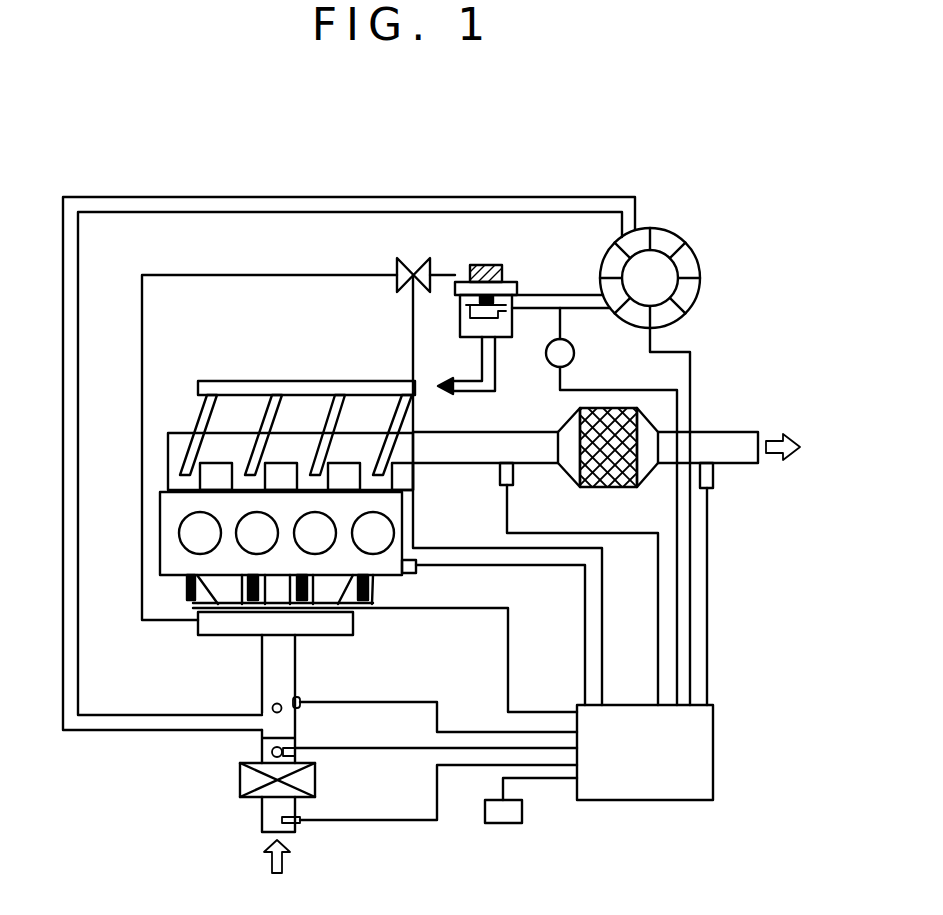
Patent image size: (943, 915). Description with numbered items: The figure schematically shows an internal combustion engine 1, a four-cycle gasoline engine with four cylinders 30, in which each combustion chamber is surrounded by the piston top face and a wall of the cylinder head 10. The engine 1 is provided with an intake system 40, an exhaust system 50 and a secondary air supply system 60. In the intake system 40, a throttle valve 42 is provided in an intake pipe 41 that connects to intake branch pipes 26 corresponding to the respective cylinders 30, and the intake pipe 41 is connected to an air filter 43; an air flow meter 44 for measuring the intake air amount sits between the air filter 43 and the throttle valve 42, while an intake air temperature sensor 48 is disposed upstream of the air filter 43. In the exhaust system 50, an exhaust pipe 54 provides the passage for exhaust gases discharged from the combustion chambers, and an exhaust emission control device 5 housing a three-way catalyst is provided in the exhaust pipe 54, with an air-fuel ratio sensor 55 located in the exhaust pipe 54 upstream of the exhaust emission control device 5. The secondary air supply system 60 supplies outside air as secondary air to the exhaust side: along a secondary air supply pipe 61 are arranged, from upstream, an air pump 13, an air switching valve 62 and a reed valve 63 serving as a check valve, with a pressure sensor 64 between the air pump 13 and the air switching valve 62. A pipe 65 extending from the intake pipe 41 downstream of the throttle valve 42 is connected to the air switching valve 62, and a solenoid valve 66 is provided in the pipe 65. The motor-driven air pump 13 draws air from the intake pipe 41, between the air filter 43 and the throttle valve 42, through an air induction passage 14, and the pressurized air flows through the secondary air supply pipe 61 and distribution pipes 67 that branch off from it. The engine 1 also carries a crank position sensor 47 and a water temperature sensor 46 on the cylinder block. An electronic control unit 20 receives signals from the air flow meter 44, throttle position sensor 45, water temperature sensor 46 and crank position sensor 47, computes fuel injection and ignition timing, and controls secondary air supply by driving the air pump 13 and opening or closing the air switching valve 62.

The internal combustion engine 1 is at (337, 572).
The exhaust emission control device 5 is at (585, 490).
The cylinder head 10 is at (160, 503).
The air pump 13 is at (701, 261).
The air induction passage 14 is at (416, 197).
The electronic control unit (ECU) 20 is at (638, 801).
The intake branch pipes 26 is at (374, 578).
The cylinders 30 is at (180, 540).
The intake system 40 is at (242, 802).
The intake pipe 41 is at (288, 682).
The throttle valve 42 is at (270, 710).
The air filter 43 is at (320, 780).
The air flow meter 44 is at (273, 750).
The throttle position sensor 45 is at (302, 709).
The water temperature sensor 46 is at (417, 571).
The crank position sensor 47 is at (498, 824).
The intake air temperature sensor 48 is at (302, 824).
The exhaust system 50 is at (606, 447).
The exhaust pipe 54 is at (440, 465).
The air-fuel ratio sensor 55 is at (500, 474).
The secondary air supply system 60 is at (684, 441).
The secondary air supply pipe 61 is at (548, 295).
The air switching valve 62 is at (498, 265).
The reed valve 63 is at (460, 328).
The pressure sensor 64 is at (576, 353).
The pipe 65 is at (296, 277).
The solenoid valve 66 is at (397, 268).
The distribution pipes 67 is at (270, 409).